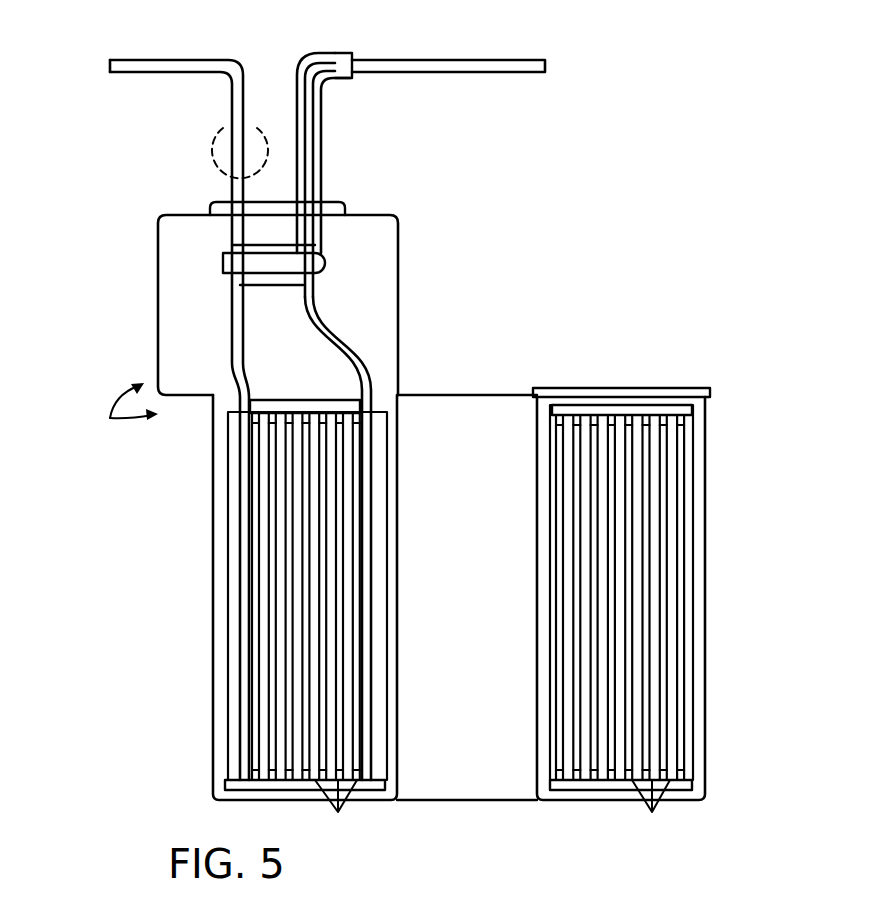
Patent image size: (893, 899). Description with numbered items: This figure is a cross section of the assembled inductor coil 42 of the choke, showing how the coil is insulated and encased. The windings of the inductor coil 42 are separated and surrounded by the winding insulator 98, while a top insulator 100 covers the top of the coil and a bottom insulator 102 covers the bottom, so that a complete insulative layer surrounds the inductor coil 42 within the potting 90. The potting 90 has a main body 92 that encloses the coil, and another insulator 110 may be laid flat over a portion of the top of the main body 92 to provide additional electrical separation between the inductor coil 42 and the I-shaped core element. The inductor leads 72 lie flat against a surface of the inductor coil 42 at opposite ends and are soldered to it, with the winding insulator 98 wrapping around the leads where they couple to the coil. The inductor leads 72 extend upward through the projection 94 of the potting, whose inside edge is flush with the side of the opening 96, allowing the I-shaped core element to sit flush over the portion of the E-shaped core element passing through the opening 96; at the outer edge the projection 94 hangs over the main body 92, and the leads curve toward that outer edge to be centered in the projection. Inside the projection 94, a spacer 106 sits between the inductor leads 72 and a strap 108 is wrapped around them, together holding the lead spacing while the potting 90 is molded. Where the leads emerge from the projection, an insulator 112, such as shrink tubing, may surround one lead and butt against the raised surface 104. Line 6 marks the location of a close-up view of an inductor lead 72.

The line 6- 6 is at (217, 122).
The inductor coil 42 is at (492, 813).
The inductor leads 72 is at (222, 59).
The potting 90 is at (123, 414).
The main body 92 is at (376, 798).
The projection 94 is at (172, 297).
The opening 96 is at (466, 372).
The winding insulator 98 is at (235, 500).
The top insulator 100 is at (306, 410).
The bottom insulator 102 is at (238, 785).
The raised surface 104 is at (341, 206).
The spacer 106 is at (291, 248).
The strap 108 is at (320, 264).
The insulator 110 is at (694, 388).
The insulator 112 is at (338, 55).